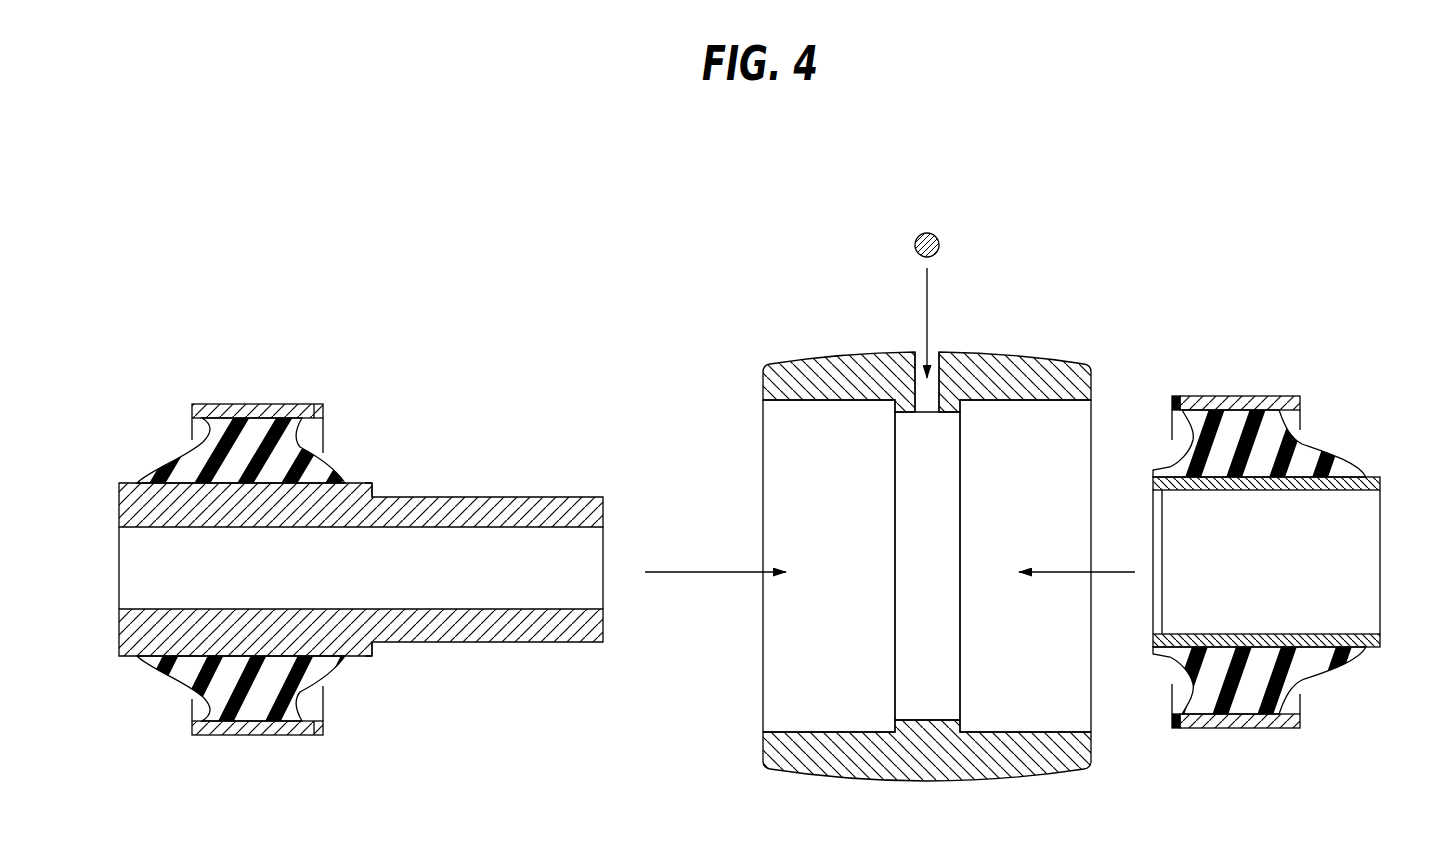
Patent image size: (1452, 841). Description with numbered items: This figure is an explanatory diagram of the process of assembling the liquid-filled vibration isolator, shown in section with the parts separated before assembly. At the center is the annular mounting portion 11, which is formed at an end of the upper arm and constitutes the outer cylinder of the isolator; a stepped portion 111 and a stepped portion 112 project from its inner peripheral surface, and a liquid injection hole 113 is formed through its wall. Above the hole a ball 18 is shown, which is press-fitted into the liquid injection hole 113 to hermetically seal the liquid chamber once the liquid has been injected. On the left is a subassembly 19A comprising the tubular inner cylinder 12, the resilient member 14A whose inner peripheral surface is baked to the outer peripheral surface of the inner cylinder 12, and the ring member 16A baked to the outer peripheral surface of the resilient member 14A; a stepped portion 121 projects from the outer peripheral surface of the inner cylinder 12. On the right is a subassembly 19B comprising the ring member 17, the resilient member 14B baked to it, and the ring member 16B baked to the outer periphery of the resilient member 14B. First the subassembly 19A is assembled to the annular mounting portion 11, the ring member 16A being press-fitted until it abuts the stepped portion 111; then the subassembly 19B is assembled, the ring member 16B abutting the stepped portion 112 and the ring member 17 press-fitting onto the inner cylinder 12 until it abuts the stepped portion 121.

The annular mounting portion 11 is at (927, 494).
The stepped portion 111 is at (893, 401).
The stepped portion 112 is at (965, 407).
The liquid injection hole 113 is at (919, 407).
The inner cylinder 12 is at (366, 527).
The stepped portion 121 is at (373, 492).
The resilient member 14A is at (172, 462).
The resilient member 14B is at (1313, 452).
The ring member 16A is at (263, 405).
The ring member 16B is at (1255, 395).
The ring member 17 is at (1227, 492).
The ball 18 is at (915, 247).
The subassembly 19A is at (294, 486).
The subassembly 19B is at (1302, 500).